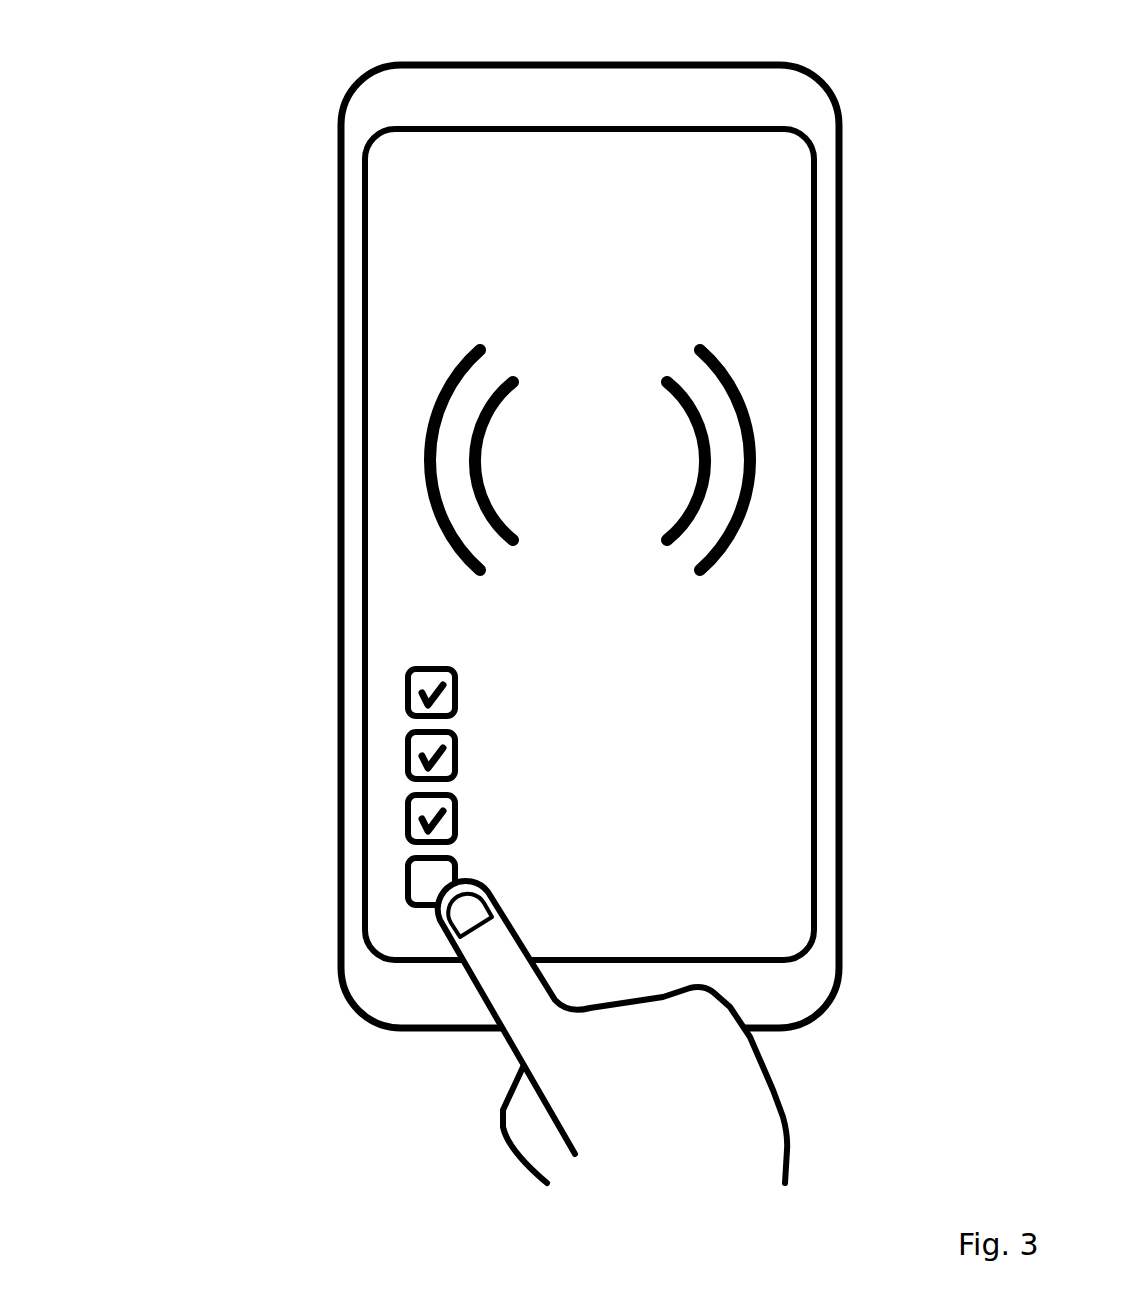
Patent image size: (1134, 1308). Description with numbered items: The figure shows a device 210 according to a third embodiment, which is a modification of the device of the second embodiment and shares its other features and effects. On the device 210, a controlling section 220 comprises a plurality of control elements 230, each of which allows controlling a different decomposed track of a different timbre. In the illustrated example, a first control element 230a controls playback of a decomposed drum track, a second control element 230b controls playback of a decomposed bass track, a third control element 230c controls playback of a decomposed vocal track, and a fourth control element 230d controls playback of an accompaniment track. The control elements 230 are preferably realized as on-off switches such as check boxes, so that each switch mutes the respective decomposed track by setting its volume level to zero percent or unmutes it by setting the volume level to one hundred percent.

The device 210 is at (350, 66).
The controlling section 220 is at (391, 732).
The control elements 230 is at (287, 787).
The first control element 230a is at (421, 683).
The second control element 230b is at (421, 745).
The third control element 230c is at (421, 808).
The fourth control element 230d is at (422, 881).